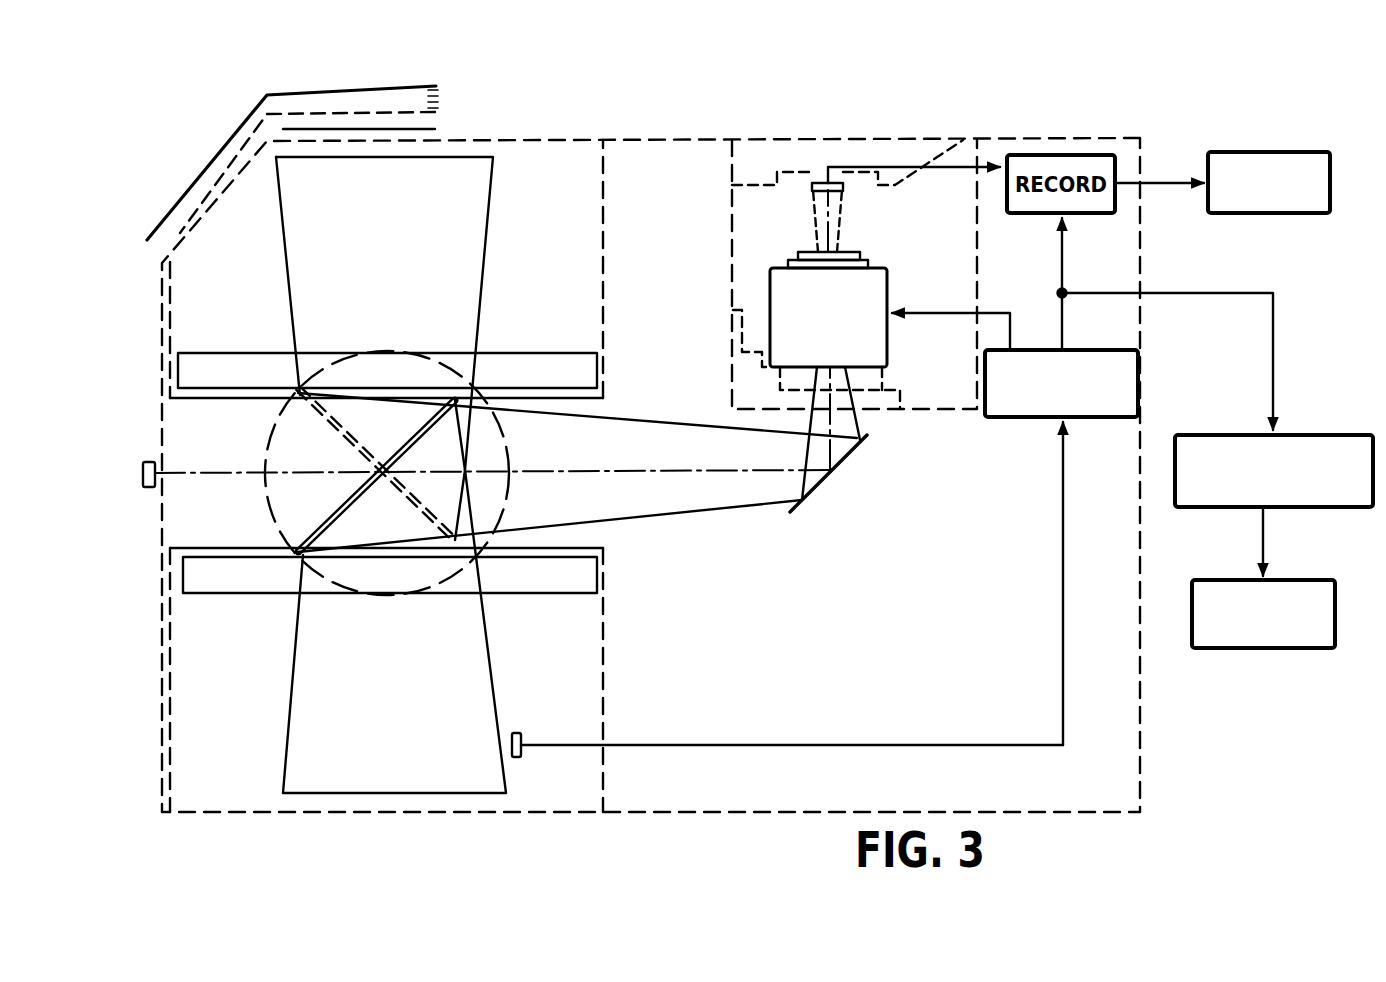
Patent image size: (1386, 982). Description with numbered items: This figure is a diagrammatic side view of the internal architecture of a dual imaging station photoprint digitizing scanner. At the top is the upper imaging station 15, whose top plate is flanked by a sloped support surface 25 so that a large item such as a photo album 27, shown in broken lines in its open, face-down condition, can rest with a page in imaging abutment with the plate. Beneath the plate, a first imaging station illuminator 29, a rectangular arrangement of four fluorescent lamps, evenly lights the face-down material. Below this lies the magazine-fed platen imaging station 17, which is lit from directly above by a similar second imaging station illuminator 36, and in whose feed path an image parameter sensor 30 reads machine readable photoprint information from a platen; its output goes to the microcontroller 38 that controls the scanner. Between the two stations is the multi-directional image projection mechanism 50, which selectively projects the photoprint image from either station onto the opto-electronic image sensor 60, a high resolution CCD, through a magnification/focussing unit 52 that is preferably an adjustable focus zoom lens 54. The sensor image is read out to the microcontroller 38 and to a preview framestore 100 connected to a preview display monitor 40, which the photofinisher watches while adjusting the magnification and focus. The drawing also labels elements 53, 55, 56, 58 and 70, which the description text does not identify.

The upper imaging station 15 is at (520, 138).
The platen imaging station 17 is at (472, 803).
The sloped support surface 25 is at (190, 250).
The photo album 27 is at (212, 128).
The first imaging station illuminator 29 is at (593, 350).
The image parameter sensor 30 is at (520, 732).
The second imaging station illuminator 36 is at (547, 592).
The microcontroller 38 is at (1139, 360).
The preview display monitor 40 is at (1222, 648).
The multi-directional image projection mechanism 50 is at (686, 540).
The magnification/focussing unit 52 is at (713, 329).
The rotatable mirror 53 is at (323, 517).
The adjustable focus zoom lens 54 is at (890, 283).
The document sensor 55 is at (145, 488).
The fixed mirror 56 is at (827, 482).
The optical axis 58 is at (663, 467).
The opto-electronic image sensor 60 is at (820, 178).
The display 70 is at (1263, 214).
The preview framestore 100 is at (1189, 441).